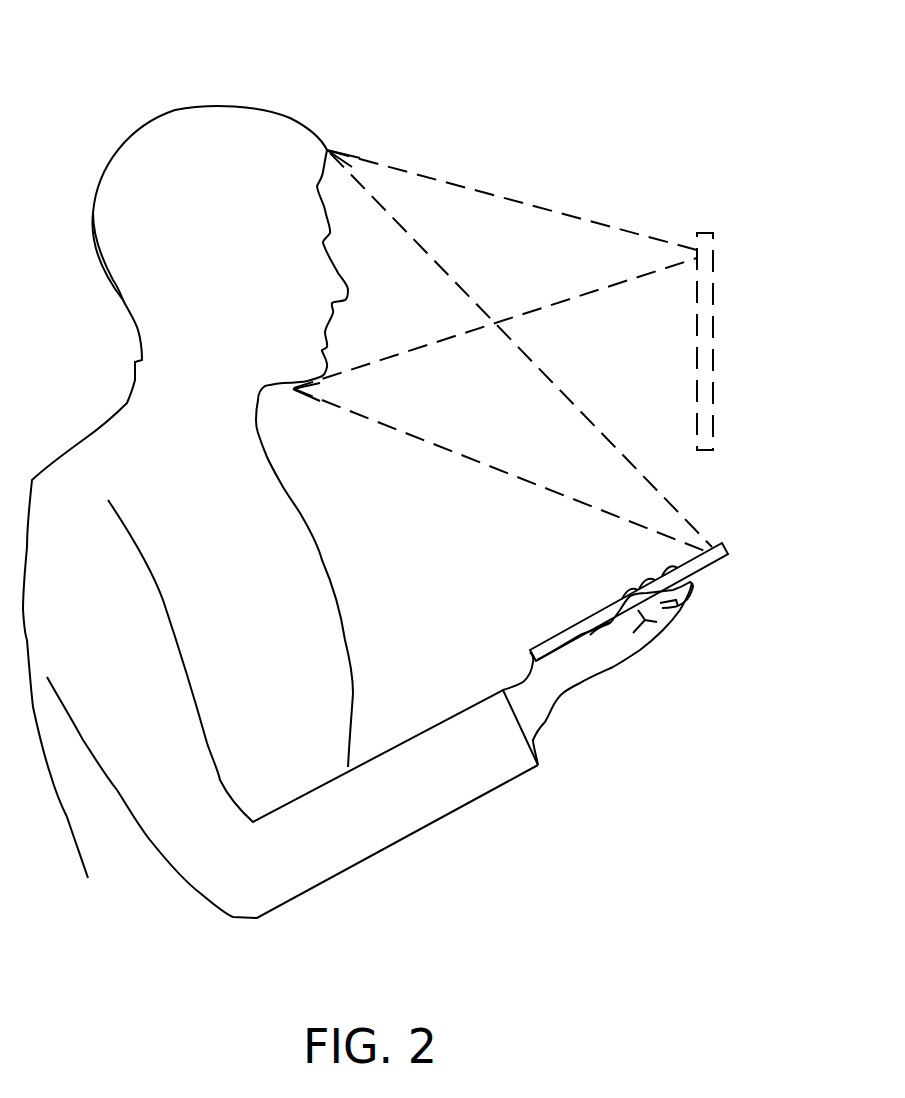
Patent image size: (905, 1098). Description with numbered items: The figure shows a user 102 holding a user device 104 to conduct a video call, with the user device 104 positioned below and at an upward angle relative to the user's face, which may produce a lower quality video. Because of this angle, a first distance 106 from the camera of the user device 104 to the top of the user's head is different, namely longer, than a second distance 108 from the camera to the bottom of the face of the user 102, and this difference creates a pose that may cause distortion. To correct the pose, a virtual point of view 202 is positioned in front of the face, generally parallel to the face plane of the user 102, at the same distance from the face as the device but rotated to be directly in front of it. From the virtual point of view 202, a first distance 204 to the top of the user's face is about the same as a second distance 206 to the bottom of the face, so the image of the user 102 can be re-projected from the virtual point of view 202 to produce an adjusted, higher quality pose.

The user 102 is at (135, 85).
The user device 104 is at (727, 597).
The first distance 106 is at (388, 210).
The second distance 108 is at (433, 450).
The virtual point of view 202 is at (713, 278).
The first distance 204 is at (508, 195).
The second distance 206 is at (558, 303).